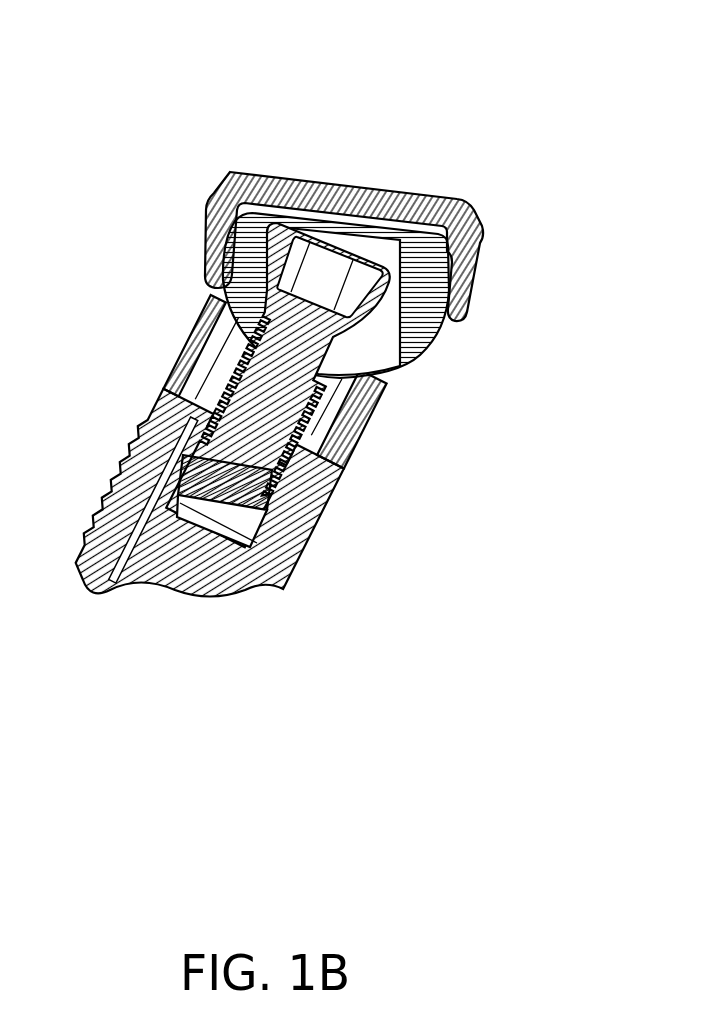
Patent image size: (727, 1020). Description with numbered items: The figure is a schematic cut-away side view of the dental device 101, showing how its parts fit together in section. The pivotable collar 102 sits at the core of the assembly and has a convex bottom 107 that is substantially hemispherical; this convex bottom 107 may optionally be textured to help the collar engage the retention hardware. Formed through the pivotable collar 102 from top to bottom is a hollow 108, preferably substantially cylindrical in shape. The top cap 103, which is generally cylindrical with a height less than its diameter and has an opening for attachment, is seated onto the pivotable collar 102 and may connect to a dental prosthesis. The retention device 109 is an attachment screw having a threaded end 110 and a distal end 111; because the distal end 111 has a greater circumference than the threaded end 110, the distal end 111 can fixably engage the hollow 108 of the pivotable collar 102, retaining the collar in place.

The dental device 101 is at (330, 112).
The pivotable collar 102 is at (230, 297).
The top cap 103 is at (218, 200).
The convex bottom 107 is at (407, 363).
The hollow 108 is at (327, 234).
The retention device 109 is at (357, 433).
The threaded end 110 is at (300, 525).
The distal end 111 is at (380, 297).